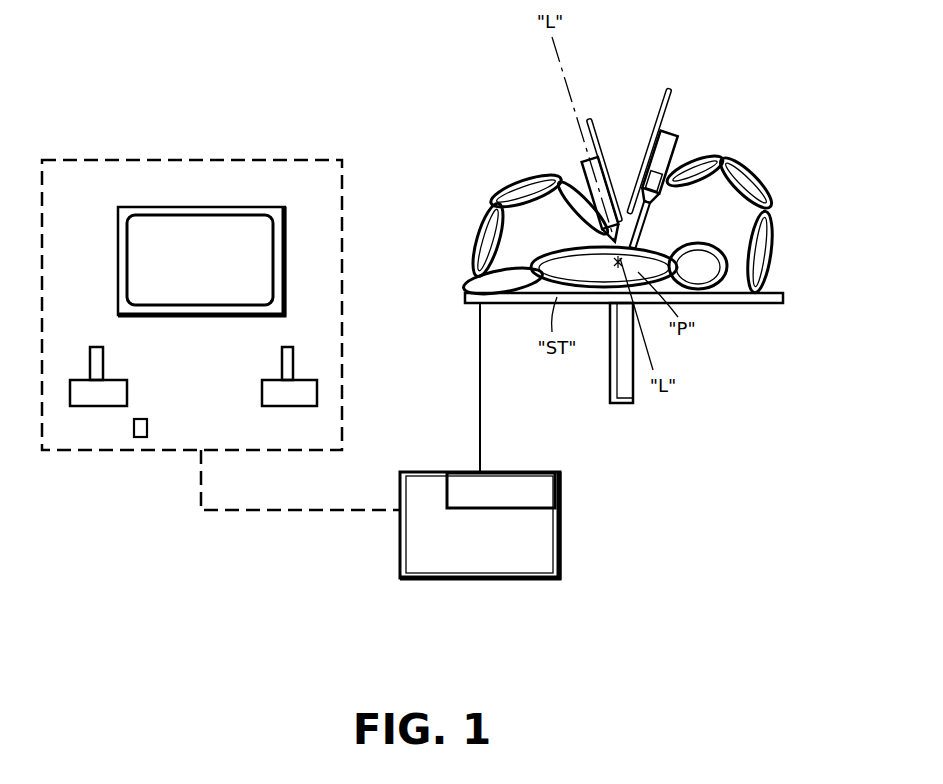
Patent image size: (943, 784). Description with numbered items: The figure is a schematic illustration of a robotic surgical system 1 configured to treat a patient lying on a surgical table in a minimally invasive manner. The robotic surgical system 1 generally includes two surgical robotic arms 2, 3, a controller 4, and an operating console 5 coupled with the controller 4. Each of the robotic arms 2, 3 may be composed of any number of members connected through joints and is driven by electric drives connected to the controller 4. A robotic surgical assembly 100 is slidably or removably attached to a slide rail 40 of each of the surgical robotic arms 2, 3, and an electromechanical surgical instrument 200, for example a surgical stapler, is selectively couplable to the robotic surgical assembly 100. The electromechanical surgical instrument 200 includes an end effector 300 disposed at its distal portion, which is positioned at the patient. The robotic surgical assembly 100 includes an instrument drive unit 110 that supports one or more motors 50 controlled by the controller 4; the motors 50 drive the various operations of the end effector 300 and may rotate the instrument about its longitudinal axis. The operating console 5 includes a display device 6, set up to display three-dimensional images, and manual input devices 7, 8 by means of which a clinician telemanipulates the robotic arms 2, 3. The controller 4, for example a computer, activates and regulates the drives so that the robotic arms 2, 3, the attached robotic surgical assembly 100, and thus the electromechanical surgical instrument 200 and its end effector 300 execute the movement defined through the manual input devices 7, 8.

The robotic surgical system 1 is at (694, 503).
The surgical robotic arm 2 is at (495, 202).
The surgical robotic arm 3 is at (770, 165).
The controller 4 is at (471, 541).
The operating console 5 is at (129, 123).
The display device 6 is at (199, 266).
The manual input device 7 is at (82, 397).
The manual input device 8 is at (290, 395).
The slide rail 40 is at (567, 128).
The motors 50 is at (688, 165).
The robotic surgical assembly 100 is at (598, 160).
The instrument drive unit 110 is at (672, 133).
The electromechanical surgical instrument 200 is at (590, 240).
The end effector 300 is at (618, 262).